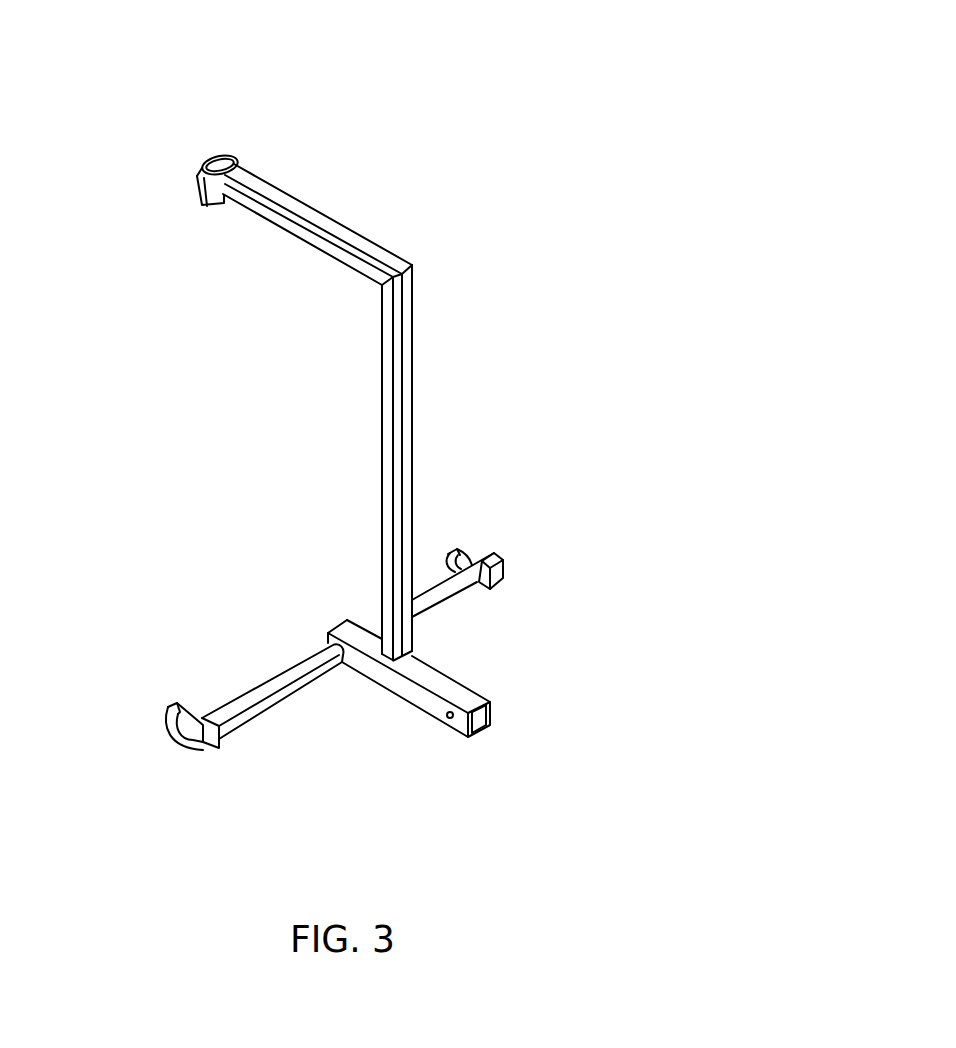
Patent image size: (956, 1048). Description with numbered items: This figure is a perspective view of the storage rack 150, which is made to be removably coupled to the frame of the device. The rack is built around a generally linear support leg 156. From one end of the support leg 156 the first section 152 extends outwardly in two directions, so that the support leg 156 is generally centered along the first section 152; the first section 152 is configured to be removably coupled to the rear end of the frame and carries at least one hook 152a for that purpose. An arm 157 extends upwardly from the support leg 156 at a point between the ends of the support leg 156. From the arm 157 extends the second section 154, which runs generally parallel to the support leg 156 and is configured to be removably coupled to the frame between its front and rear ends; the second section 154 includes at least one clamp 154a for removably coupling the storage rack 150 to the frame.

The storage rack 150 is at (530, 133).
The first section 152 is at (155, 765).
The hook 152a is at (165, 690).
The second section 154 is at (322, 168).
The clamp 154a is at (199, 148).
The support leg 156 is at (455, 765).
The arm 157 is at (385, 430).